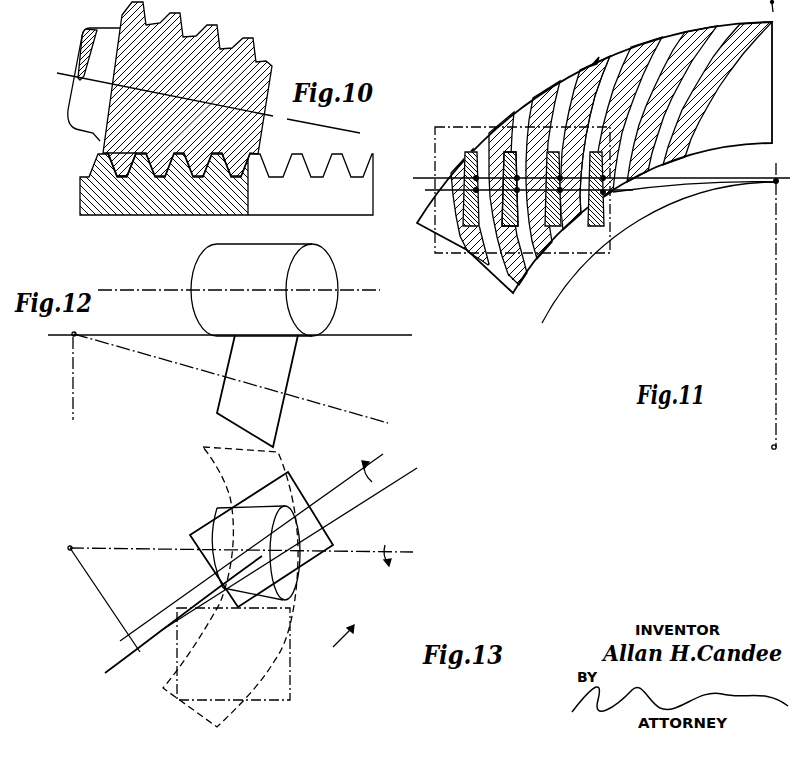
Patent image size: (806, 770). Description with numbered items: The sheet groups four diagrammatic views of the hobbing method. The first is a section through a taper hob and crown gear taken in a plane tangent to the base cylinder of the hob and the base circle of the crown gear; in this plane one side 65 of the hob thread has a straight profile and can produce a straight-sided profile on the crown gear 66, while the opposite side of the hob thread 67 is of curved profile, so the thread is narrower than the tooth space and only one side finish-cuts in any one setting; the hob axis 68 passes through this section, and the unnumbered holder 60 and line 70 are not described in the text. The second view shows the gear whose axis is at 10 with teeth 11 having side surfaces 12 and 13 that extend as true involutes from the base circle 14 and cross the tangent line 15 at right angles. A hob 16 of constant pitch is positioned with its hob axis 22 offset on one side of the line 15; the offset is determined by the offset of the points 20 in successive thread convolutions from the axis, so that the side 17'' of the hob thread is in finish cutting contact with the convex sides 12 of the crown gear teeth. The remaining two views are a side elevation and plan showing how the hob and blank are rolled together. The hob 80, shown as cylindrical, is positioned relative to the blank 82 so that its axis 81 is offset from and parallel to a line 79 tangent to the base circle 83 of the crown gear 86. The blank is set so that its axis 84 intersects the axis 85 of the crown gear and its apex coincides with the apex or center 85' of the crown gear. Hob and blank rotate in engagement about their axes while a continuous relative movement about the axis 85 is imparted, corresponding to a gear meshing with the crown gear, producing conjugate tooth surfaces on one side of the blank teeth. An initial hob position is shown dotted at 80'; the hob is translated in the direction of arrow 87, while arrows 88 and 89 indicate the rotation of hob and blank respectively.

In FIG. 11, the gear axis 10 is at (772, 448).
In FIG. 11, the teeth 11 is at (595, 60).
In FIG. 11, the side surface 12 is at (578, 78).
In FIG. 11, the side surface 13 is at (602, 90).
In FIG. 11, the base circle 14 is at (571, 282).
In FIG. 11, the line tangent to base circle 15 is at (655, 181).
In FIG. 11, the hob 16 is at (435, 140).
In FIG. 11, the side of hob thread 17'' is at (566, 205).
In FIG. 11, the points in sides of successive thread convolutions 20 is at (510, 160).
In FIG. 11, the hob axis 22 is at (620, 192).
In FIG. 11, the radial line 70 is at (783, 224).
In FIG. 10, the tool holder 60 is at (77, 110).
In FIG. 10, the straight-profile side of hob thread 65 is at (100, 158).
In FIG. 10, the crown gear 66 is at (125, 210).
In FIG. 10, the opposite side of hob thread 67 is at (125, 174).
In FIG. 10, the hob axis 68 is at (82, 80).
In FIG. 13, the line tangent to base circle 79 is at (355, 512).
In FIG. 12, the hob 80 is at (280, 290).
In FIG. 13, the hob 80 is at (271, 533).
In FIG. 13, the initial hob position 80' is at (257, 654).
In FIG. 12, the hob axis 81 is at (363, 291).
In FIG. 13, the hob axis 81 is at (348, 482).
In FIG. 12, the blank 82 is at (280, 355).
In FIG. 13, the blank 82 is at (243, 515).
In FIG. 13, the base circle 83 is at (108, 672).
In FIG. 12, the blank axis 84 is at (168, 361).
In FIG. 13, the blank axis 84 is at (348, 552).
In FIG. 12, the crown gear axis 85 is at (58, 378).
In FIG. 13, the crown gear axis 85 is at (93, 599).
In FIG. 12, the apex or center of crown gear 85' is at (99, 323).
In FIG. 12, the crown gear 86 is at (397, 336).
In FIG. 13, the crown gear 86 is at (222, 465).
In FIG. 13, the arrow 87 is at (343, 642).
In FIG. 13, the arrow 88 is at (370, 460).
In FIG. 13, the arrow 89 is at (390, 545).